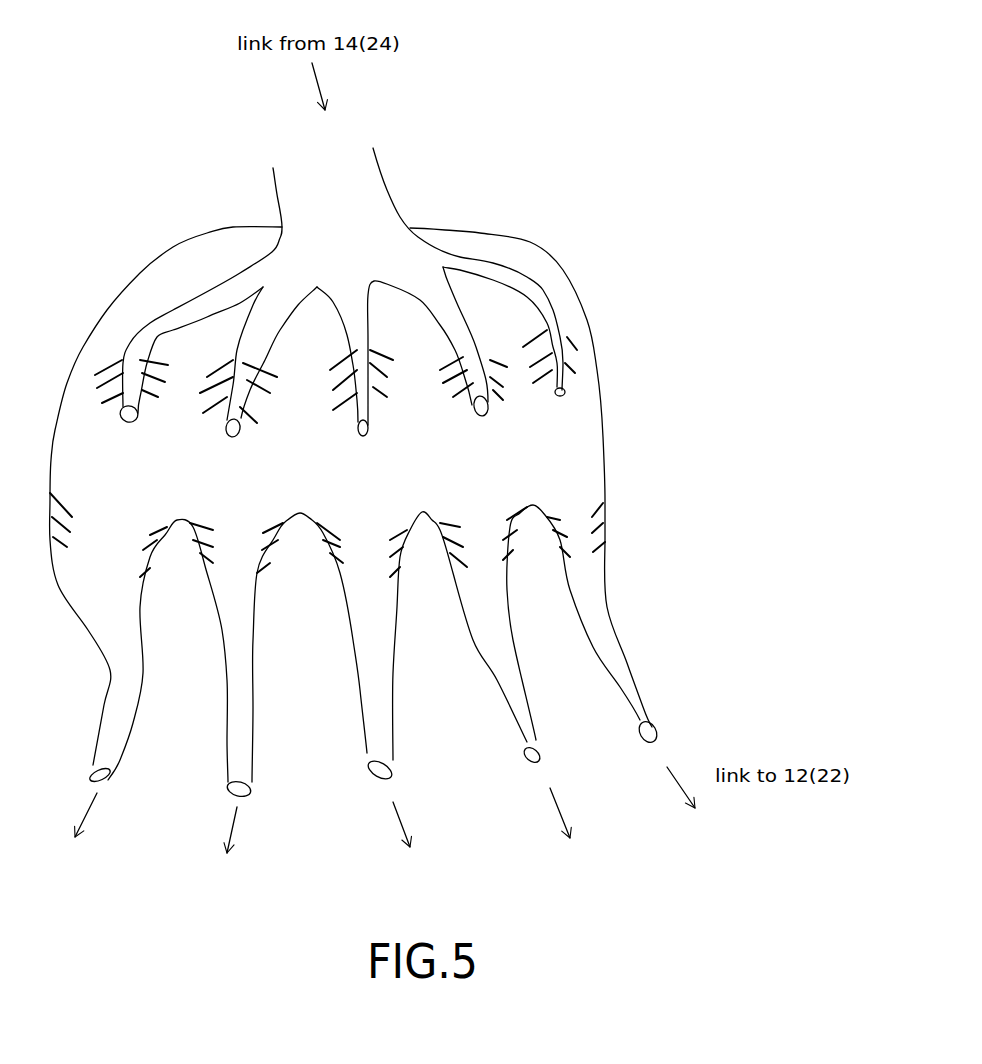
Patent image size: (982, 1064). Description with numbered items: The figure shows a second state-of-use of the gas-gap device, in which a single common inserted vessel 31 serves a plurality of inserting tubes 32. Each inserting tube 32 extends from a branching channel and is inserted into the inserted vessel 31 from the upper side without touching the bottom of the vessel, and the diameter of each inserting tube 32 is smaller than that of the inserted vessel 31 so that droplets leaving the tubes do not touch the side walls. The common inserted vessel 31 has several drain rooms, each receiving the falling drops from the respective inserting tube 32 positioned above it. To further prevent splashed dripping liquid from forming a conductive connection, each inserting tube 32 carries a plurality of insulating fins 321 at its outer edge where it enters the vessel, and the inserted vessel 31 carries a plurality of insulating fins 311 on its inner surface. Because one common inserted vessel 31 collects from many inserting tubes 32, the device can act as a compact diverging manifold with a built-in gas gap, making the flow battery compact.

The inserted vessel 31 is at (605, 436).
The fins 311 is at (597, 548).
The inserting tube 32 is at (530, 280).
The fins 321 is at (565, 343).